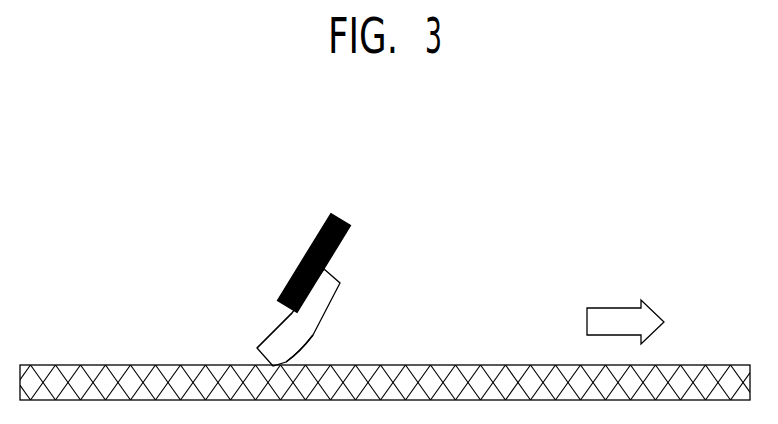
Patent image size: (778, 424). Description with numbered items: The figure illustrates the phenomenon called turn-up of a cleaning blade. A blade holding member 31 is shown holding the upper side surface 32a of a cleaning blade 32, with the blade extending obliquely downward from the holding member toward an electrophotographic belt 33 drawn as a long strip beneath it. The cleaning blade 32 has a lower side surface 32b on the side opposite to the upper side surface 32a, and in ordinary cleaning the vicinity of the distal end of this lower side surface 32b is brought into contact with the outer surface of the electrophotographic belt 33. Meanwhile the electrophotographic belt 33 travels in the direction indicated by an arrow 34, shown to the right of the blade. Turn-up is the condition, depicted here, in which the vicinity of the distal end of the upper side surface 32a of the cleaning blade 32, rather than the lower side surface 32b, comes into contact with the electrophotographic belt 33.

The blade holding member 31 is at (349, 224).
The cleaning blade 32 is at (330, 297).
The upper side surface 32a is at (282, 331).
The lower side surface 32b is at (307, 342).
The electrophotographic belt 33 is at (462, 366).
The arrow 34 is at (598, 311).